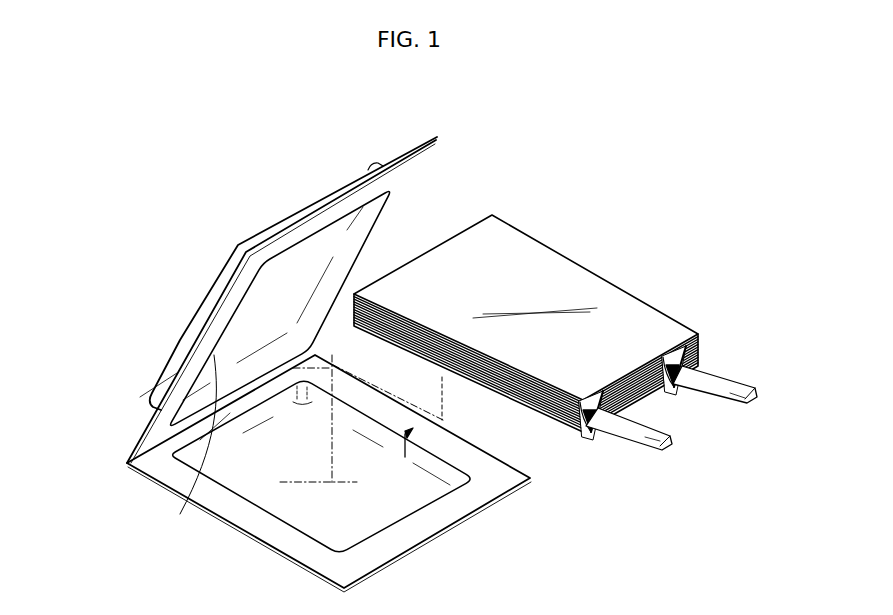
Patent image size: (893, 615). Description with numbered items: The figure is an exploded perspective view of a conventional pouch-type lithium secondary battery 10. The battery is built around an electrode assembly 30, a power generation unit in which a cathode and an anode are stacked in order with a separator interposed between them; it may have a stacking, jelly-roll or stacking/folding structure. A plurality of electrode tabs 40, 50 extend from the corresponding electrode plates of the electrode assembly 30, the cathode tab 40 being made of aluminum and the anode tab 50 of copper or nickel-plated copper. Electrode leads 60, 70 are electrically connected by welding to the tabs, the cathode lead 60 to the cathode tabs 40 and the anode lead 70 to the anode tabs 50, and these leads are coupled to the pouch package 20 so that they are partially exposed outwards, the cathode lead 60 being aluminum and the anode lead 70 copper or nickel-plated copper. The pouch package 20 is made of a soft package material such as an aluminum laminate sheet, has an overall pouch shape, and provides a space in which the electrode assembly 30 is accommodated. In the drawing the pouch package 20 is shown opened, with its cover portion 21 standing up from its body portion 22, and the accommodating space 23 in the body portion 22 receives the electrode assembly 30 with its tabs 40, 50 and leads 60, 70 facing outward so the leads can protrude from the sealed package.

The pouch-type lithium secondary battery 10 is at (537, 124).
The pouch package 20 is at (92, 421).
The cover (lid) 21 is at (150, 431).
The body (tray) 22 is at (150, 483).
The accommodating space (recess) 23 is at (246, 484).
The electrode assembly 30 is at (605, 241).
The cathode tab 40 is at (583, 441).
The anode tab 50 is at (666, 390).
The cathode lead 60 is at (636, 436).
The anode lead 70 is at (724, 376).